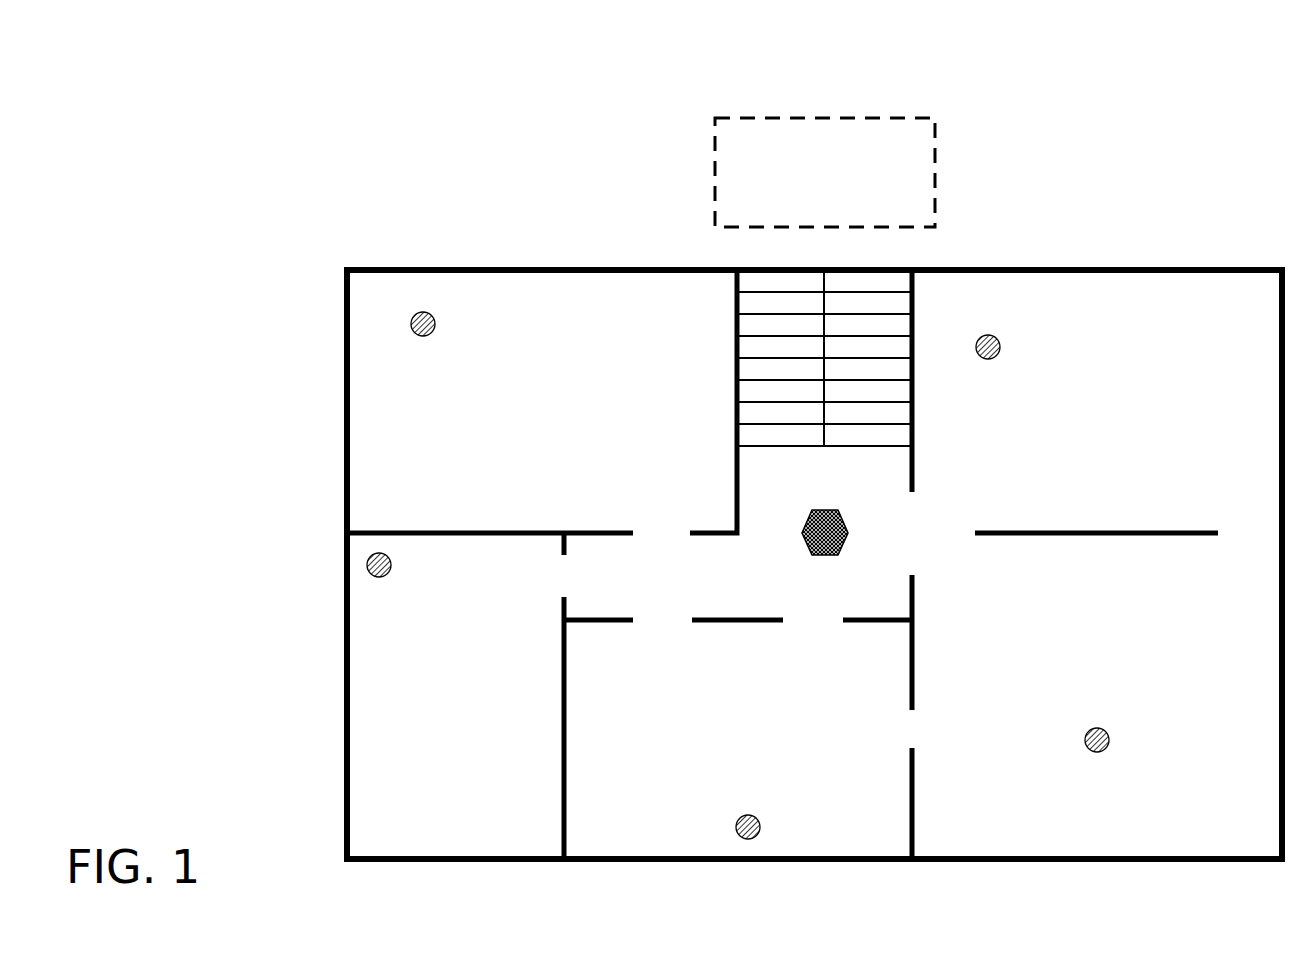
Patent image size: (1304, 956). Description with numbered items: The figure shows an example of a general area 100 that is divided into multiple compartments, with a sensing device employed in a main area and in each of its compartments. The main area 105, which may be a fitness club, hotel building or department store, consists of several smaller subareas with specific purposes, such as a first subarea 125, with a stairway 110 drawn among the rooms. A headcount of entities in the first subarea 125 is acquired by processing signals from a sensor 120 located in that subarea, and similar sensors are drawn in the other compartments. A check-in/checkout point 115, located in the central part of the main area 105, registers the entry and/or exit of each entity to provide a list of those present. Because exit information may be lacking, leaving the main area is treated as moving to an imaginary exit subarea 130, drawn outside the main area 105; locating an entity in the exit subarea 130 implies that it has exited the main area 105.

The environment / monitored facility 100 is at (1087, 96).
The main area 105 is at (389, 268).
The staircase 110 is at (737, 378).
The check-in/checkout point 115 is at (848, 533).
The sensor 120 is at (1000, 359).
The subarea 125 is at (1195, 446).
The exit subarea 130 is at (713, 205).